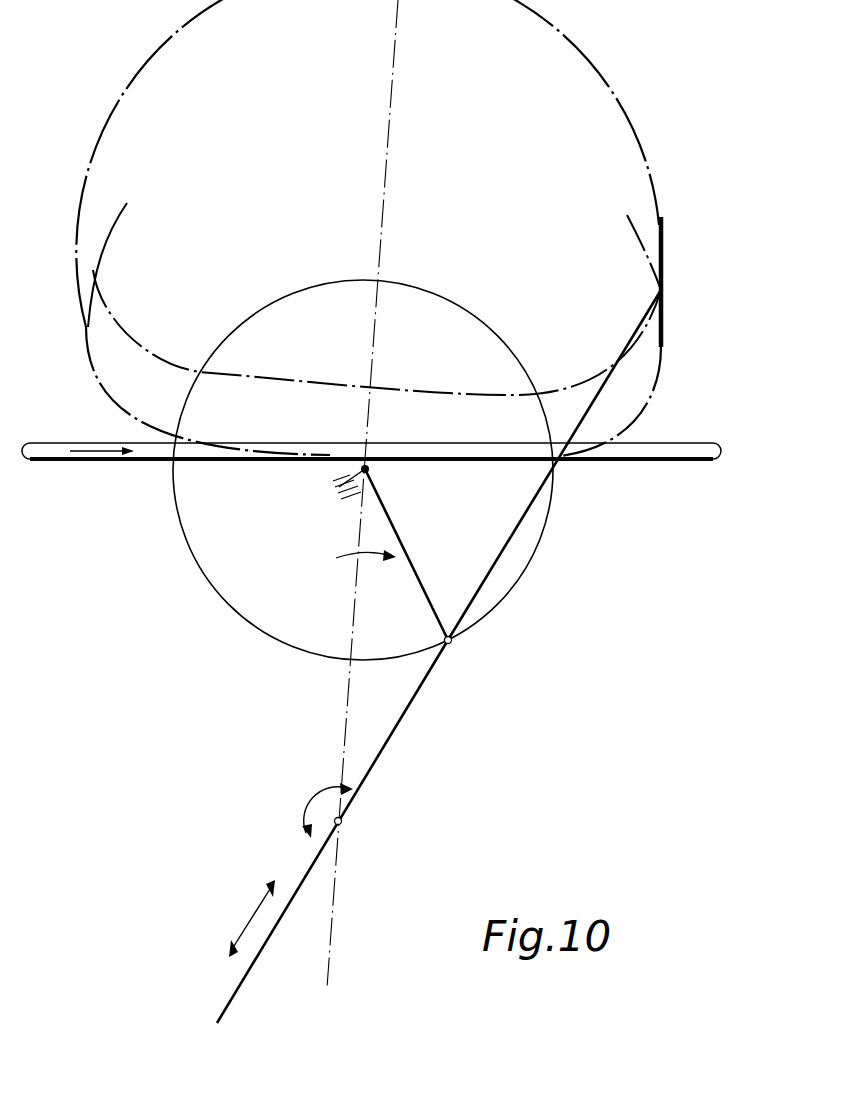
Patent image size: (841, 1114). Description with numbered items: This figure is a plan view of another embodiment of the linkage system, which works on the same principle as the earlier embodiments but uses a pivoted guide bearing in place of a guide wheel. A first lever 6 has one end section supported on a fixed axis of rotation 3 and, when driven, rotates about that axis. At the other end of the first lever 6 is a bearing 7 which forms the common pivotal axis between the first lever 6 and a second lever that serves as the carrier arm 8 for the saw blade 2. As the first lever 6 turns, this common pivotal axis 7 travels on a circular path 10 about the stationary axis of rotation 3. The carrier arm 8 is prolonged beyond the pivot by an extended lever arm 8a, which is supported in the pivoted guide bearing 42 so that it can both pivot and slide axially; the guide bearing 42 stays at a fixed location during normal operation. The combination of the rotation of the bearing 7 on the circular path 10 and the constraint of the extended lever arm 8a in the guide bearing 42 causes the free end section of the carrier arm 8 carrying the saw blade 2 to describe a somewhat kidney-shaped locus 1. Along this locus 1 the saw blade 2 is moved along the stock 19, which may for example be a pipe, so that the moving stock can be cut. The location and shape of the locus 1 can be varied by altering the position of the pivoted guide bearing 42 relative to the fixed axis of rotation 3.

The locus 1 is at (635, 160).
The saw blade 2 is at (663, 262).
The fixed axis of rotation 3 is at (367, 470).
The first lever 6 is at (418, 575).
The bearing 7 is at (450, 642).
The carrier arm 8 is at (527, 507).
The extended lever arm 8a is at (388, 743).
The circular path 10 is at (278, 643).
The stock 19 is at (690, 449).
The pivoted guide bearing 42 is at (341, 823).